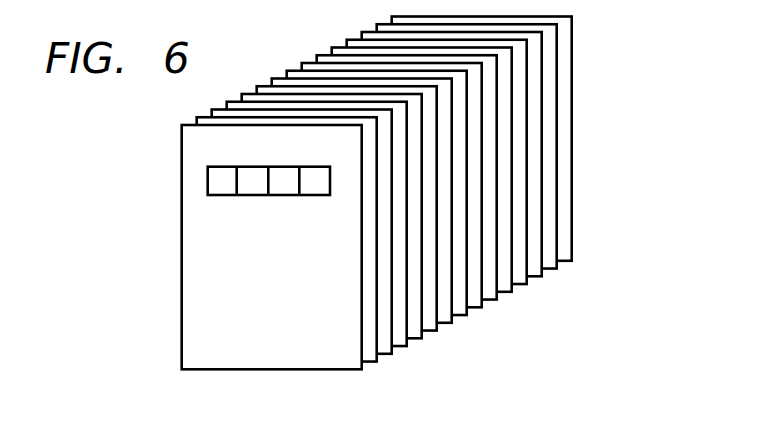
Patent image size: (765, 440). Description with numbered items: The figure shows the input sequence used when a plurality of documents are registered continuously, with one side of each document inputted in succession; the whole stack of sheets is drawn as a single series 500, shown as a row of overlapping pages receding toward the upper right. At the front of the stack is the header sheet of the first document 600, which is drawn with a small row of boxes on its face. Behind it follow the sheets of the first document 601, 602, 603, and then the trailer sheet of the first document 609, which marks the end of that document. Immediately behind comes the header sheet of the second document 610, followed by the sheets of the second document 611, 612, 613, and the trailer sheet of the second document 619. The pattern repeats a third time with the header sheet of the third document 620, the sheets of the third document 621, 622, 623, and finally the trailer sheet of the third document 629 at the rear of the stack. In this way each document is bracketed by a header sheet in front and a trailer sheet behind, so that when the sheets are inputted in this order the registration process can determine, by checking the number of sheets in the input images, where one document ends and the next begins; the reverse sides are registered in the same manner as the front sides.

The stack of plates 500 is at (427, 218).
The header sheet of the first document 600 is at (260, 362).
The first document sheet 601 is at (372, 362).
The first document sheet 602 is at (385, 358).
The first document sheet 603 is at (402, 347).
The trailer sheet of the first document 609 is at (415, 340).
The header sheet of the second document 610 is at (432, 333).
The second document sheet 611 is at (450, 325).
The second document sheet 612 is at (460, 317).
The second document sheet 613 is at (477, 308).
The trailer sheet of the second document 619 is at (500, 295).
The header sheet of the third document 620 is at (527, 288).
The third document sheet 621 is at (523, 285).
The third document sheet 622 is at (540, 280).
The third document sheet 623 is at (570, 267).
The trailer sheet of the third document 629 is at (570, 243).